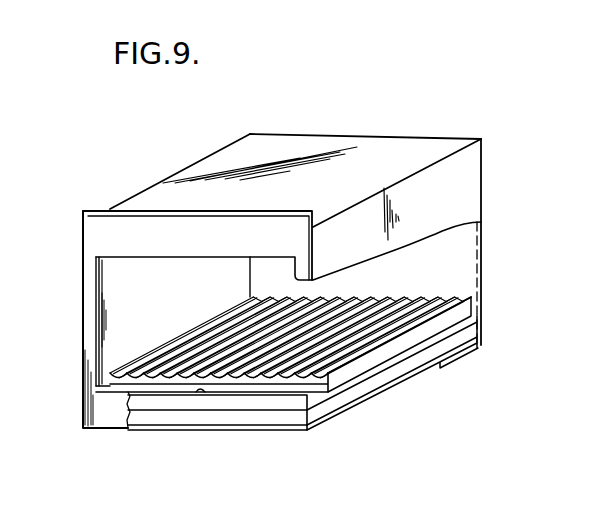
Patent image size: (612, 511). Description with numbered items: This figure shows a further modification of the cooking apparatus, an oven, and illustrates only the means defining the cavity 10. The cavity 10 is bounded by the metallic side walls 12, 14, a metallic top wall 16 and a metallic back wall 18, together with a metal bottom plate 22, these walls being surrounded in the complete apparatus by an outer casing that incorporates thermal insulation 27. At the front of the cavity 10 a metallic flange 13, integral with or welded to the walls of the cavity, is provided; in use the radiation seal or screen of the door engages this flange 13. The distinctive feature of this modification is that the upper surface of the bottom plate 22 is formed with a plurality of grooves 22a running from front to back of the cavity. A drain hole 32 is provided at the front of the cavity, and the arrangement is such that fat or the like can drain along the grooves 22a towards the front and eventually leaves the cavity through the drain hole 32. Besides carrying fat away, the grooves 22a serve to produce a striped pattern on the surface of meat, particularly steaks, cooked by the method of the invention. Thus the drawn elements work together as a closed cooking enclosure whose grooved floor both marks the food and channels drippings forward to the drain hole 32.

The cavity 10 is at (182, 302).
The side wall 12 is at (123, 271).
The flange 13 is at (97, 234).
The side wall 14 is at (463, 162).
The top wall 16 is at (222, 163).
The back wall 18 is at (372, 152).
The bottom plate 22 is at (373, 368).
The grooves 22a is at (157, 358).
The thermal insulation 27 is at (340, 403).
The drain hole 32 is at (203, 393).